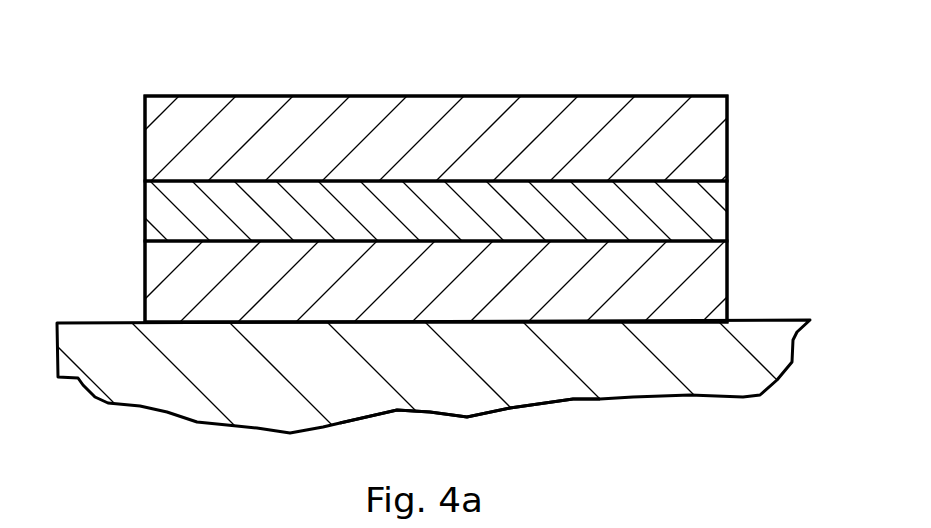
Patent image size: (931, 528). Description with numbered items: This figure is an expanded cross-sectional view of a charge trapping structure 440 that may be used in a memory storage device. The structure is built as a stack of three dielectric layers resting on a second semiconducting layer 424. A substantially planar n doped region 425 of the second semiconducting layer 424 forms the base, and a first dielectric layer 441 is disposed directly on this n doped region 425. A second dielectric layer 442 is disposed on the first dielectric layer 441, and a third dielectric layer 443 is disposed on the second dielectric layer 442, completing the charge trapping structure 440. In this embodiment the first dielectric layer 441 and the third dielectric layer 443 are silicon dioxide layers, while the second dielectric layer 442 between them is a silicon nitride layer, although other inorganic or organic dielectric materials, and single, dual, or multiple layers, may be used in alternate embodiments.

The charge trapping structure 440 is at (126, 45).
The first dielectric layer 441 is at (715, 268).
The second dielectric layer 442 is at (162, 210).
The third dielectric layer 443 is at (482, 112).
The second semiconducting layer 424 is at (717, 382).
The n doped region 425 is at (515, 350).